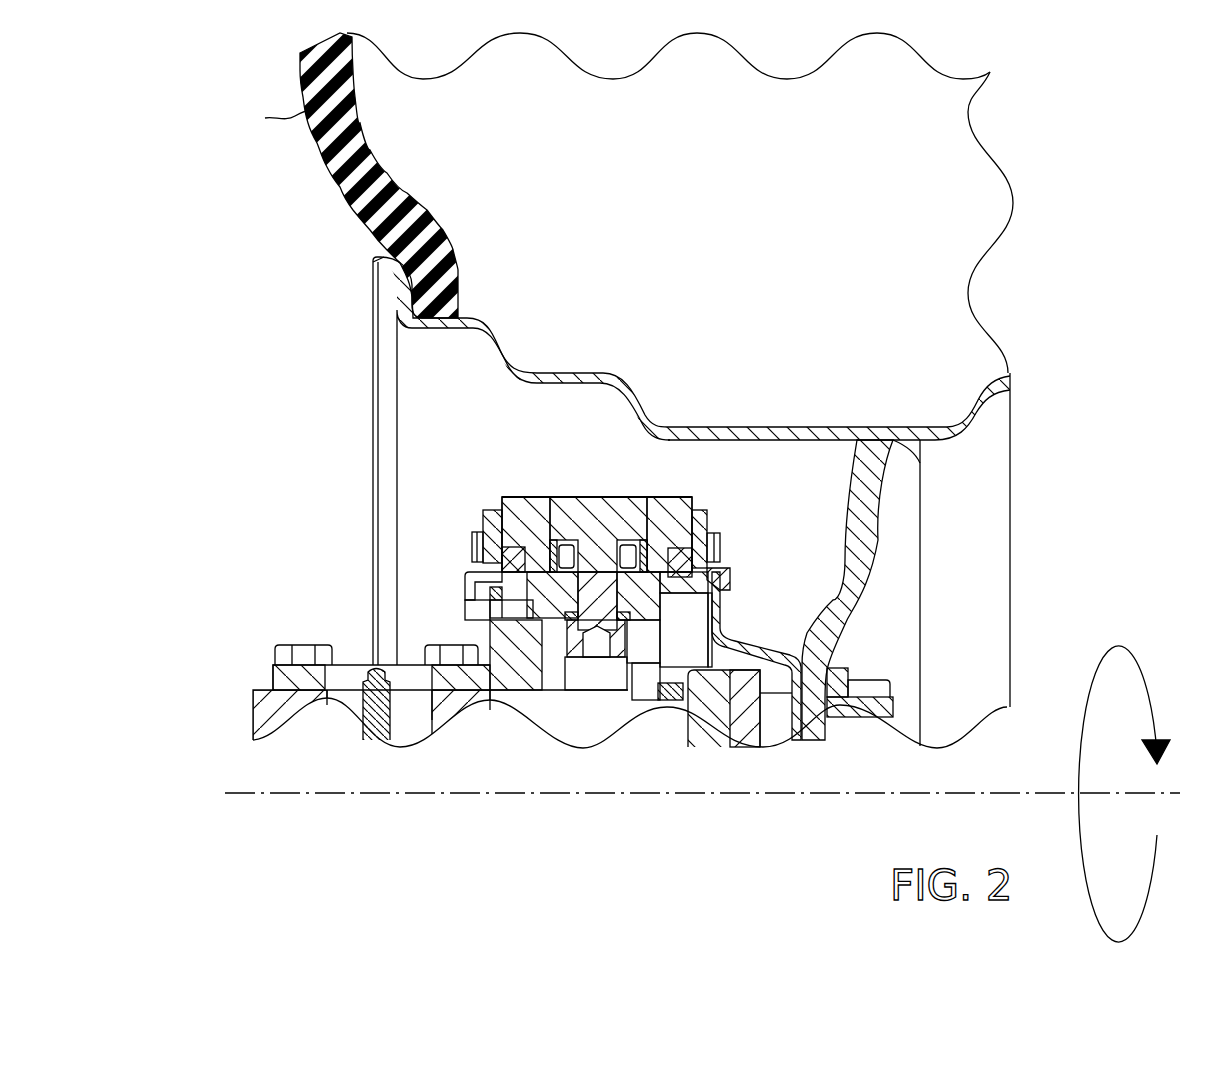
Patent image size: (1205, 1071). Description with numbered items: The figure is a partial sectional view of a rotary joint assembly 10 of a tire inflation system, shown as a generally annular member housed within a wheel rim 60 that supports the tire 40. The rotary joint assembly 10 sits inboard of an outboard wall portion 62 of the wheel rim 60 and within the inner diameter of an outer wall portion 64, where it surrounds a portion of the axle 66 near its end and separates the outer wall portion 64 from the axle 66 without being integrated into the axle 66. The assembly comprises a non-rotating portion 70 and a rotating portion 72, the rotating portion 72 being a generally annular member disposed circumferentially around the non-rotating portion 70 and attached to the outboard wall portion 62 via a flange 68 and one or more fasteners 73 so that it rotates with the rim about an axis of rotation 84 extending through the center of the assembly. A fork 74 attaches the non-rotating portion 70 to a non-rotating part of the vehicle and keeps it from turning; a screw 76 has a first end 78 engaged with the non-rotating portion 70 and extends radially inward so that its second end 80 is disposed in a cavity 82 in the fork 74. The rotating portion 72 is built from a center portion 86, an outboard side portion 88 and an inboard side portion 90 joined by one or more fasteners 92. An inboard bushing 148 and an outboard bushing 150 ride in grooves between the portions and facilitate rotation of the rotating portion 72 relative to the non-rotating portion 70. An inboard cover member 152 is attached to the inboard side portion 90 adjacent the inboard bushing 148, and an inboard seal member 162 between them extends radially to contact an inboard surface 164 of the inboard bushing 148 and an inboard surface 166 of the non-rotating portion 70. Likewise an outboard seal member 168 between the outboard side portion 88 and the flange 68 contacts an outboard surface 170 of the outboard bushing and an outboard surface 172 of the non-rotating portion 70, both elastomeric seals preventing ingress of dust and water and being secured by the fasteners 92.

The rotary joint assembly 10 is at (468, 497).
The tire 40 is at (312, 110).
The wheel rim 60 is at (490, 325).
The outboard wall portion 62 is at (870, 540).
The outer wall portion 64 is at (725, 427).
The axle 66 is at (262, 715).
The flange 68 is at (800, 618).
The non-rotating portion 70 is at (497, 607).
The rotating portion 72 is at (578, 505).
The fasteners 73 is at (897, 708).
The fork 74 is at (497, 637).
The screw 76 is at (575, 672).
The first end 78 is at (643, 525).
The second end 80 is at (605, 655).
The cavity 82 is at (573, 673).
The axis of rotation 84 is at (703, 797).
The center portion 86 is at (610, 535).
The outboard side portion 88 is at (690, 500).
The inboard side portion 90 is at (515, 500).
The fasteners 92 is at (472, 548).
The inboard bushing 148 is at (530, 497).
The outboard bushing 150 is at (712, 548).
The inboard cover member 152 is at (480, 583).
The inboard seal member 162 is at (498, 500).
The inboard surface 164 is at (488, 553).
The inboard surface 166 is at (467, 590).
The outboard seal member 168 is at (712, 510).
The outboard surface 170 is at (712, 562).
The outboard surface 172 is at (775, 603).